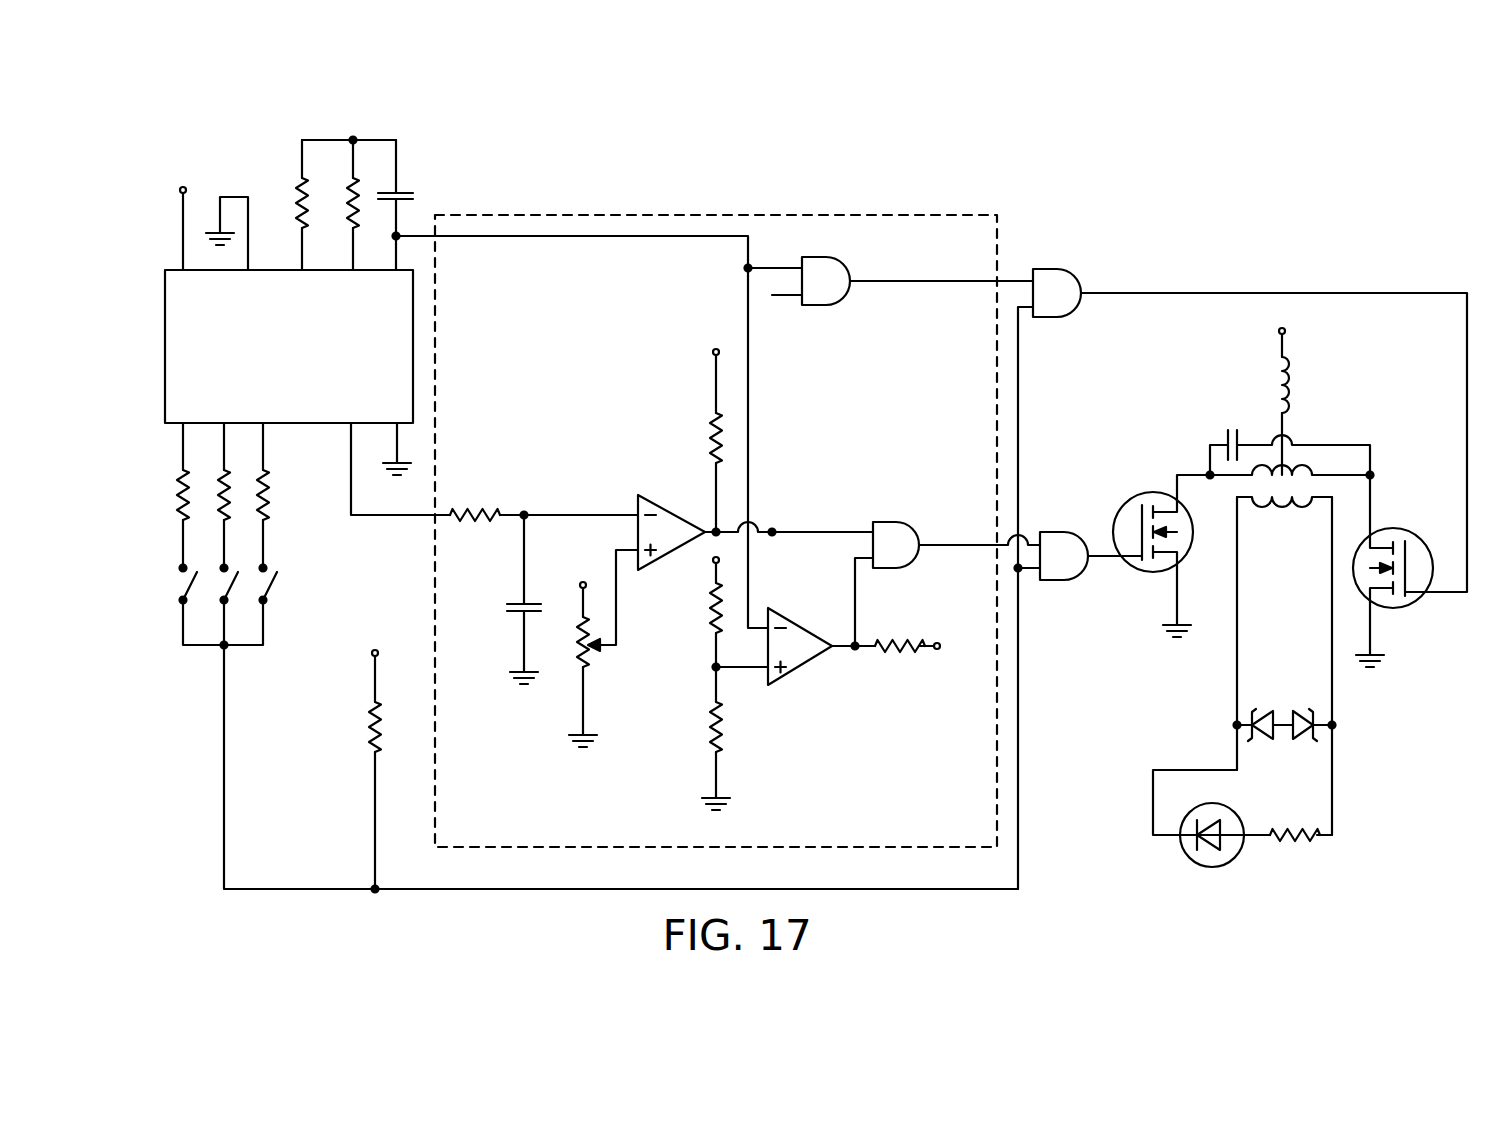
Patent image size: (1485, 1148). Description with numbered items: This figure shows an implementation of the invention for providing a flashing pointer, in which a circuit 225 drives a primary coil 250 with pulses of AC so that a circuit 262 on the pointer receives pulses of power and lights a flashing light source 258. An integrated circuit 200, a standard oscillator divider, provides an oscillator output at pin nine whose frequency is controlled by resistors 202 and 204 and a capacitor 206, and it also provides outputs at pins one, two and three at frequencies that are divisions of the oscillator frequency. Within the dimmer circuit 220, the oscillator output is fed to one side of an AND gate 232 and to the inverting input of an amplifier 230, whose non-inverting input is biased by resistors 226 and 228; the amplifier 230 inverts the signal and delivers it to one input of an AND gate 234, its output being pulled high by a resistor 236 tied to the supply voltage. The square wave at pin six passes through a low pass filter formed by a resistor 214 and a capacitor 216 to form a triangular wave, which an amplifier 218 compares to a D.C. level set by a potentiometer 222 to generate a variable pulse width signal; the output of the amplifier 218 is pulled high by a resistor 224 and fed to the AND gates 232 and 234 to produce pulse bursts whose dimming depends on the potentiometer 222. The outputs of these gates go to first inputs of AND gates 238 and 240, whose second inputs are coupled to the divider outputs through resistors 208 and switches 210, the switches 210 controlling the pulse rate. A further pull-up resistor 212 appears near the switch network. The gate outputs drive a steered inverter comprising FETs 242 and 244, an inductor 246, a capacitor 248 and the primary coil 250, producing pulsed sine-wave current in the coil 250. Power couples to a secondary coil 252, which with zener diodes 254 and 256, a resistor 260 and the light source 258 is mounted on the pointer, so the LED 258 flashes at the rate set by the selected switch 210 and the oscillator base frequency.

The integrated circuit 200 is at (320, 425).
The resistor 202 is at (298, 212).
The resistor 204 is at (350, 200).
The capacitor 206 is at (408, 190).
The resistors 208 is at (163, 477).
The switches 210 is at (173, 586).
The pull-up resistor 212 is at (370, 722).
The resistor 214 is at (470, 500).
The capacitor 216 is at (517, 600).
The amplifier 218 is at (660, 492).
The dimmer circuit 220 is at (645, 215).
The potentiometer 222 is at (601, 650).
The resistor 224 is at (710, 432).
The circuit 225 is at (952, 152).
The resistor 226 is at (710, 600).
The resistor 228 is at (720, 735).
The amplifier 230 is at (803, 660).
The AND gate 232 is at (813, 293).
The AND gate 234 is at (903, 522).
The resistor 236 is at (918, 648).
The AND gate 238 is at (1052, 268).
The AND gate 240 is at (1062, 530).
The FET 242 is at (1148, 492).
The FET 244 is at (1413, 530).
The inductor 246 is at (1292, 392).
The capacitor 248 is at (1226, 440).
The primary coil 250 is at (1295, 470).
The coil 252 is at (1282, 512).
The zener diode 254 is at (1268, 712).
The zener diode 256 is at (1303, 733).
The light source 258 is at (1205, 867).
The resistor 260 is at (1272, 840).
The circuit 262 is at (1208, 722).